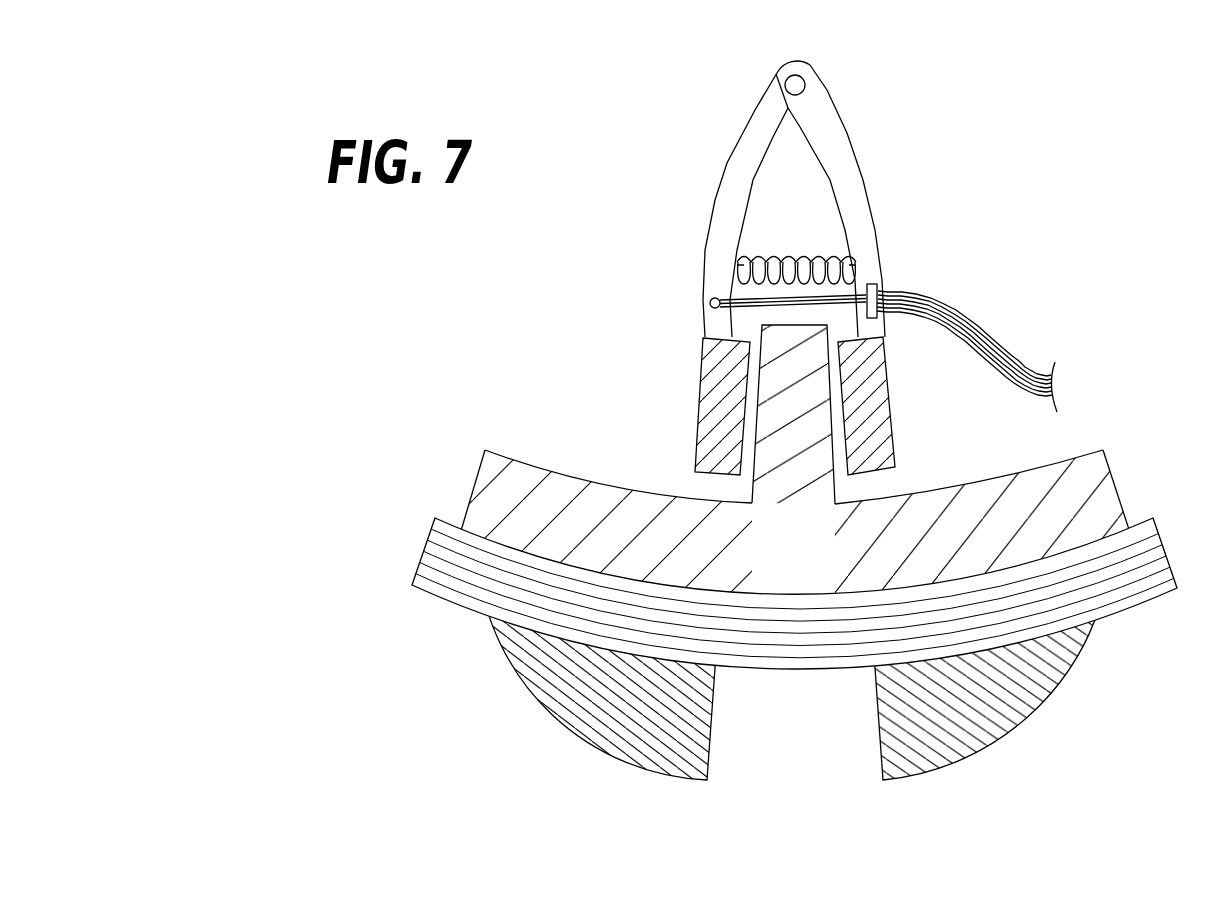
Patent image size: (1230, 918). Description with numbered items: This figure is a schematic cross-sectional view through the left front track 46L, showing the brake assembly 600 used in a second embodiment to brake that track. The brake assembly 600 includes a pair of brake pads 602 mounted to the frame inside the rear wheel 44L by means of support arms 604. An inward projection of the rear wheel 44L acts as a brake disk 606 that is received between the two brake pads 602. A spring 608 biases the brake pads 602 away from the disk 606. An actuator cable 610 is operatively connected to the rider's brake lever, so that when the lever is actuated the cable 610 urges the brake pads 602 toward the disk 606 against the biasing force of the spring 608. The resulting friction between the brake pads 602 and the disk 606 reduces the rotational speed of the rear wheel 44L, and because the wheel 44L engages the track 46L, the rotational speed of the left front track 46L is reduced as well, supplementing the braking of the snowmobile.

The brake assembly 600 is at (861, 258).
The brake pads 602 is at (710, 447).
The support arms 604 is at (840, 153).
The brake disk 606 is at (783, 417).
The spring 608 is at (777, 260).
The actuator cable 610 is at (1017, 360).
The rear wheel 44L is at (809, 472).
The left front track 46L is at (1160, 545).